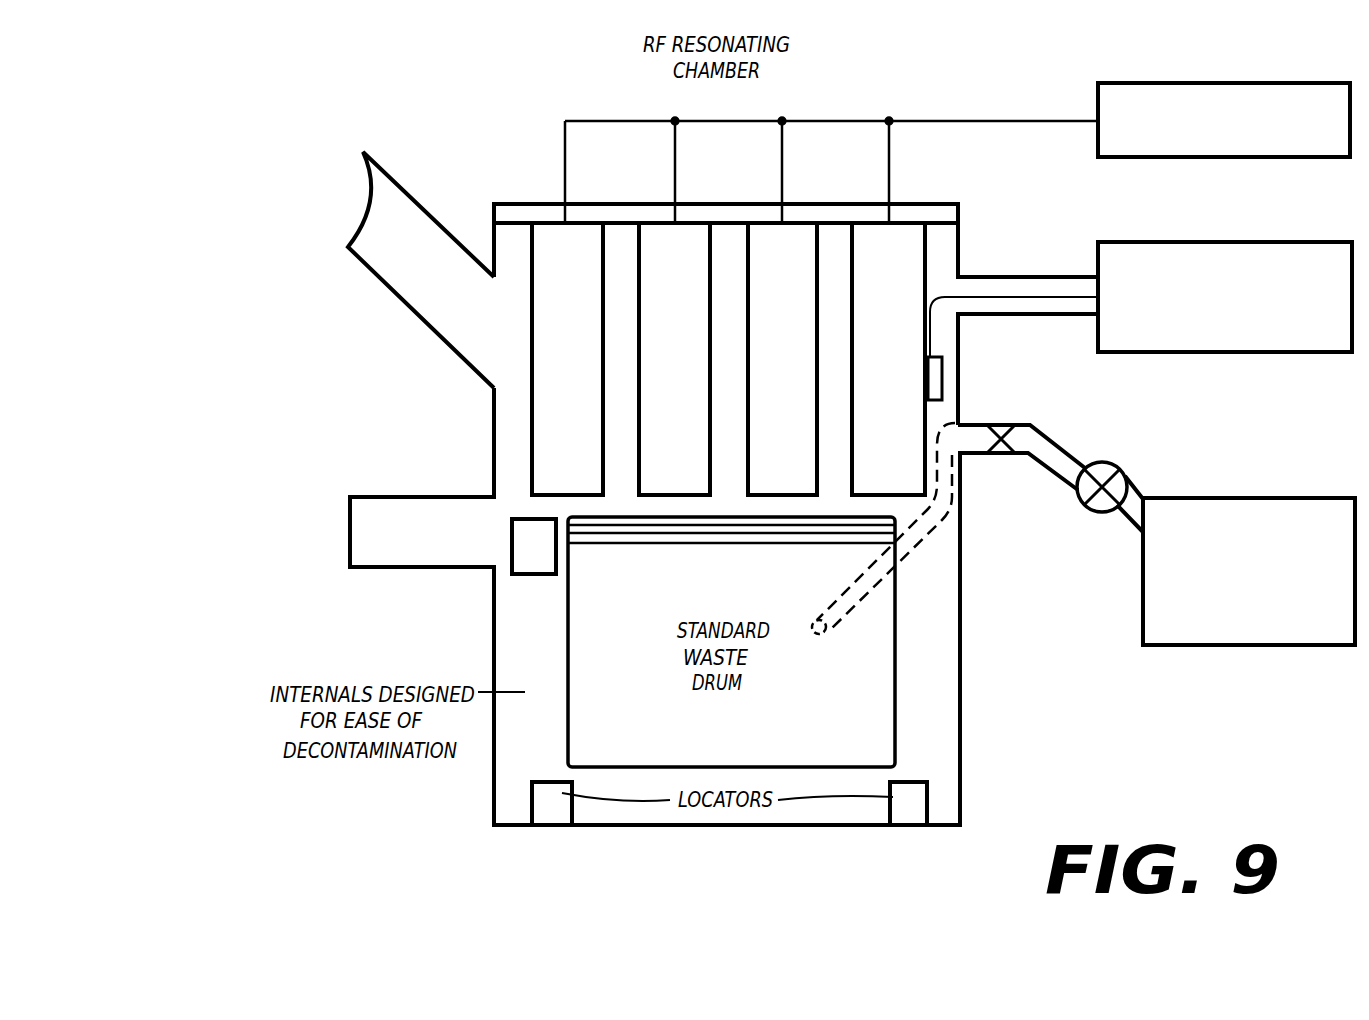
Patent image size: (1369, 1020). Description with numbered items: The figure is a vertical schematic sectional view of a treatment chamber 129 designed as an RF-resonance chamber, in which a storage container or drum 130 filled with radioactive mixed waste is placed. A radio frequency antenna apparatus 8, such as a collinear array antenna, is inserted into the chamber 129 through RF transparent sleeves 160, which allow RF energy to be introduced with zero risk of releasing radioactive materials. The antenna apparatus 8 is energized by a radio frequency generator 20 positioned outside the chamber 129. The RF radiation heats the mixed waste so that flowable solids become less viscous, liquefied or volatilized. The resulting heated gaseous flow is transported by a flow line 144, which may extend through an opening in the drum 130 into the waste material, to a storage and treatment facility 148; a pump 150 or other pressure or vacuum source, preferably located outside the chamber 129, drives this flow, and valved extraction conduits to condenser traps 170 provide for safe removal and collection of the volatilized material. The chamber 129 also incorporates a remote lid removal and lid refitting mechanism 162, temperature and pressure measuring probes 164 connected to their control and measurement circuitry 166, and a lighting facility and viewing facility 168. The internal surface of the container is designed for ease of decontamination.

The radio frequency generator 20 is at (1165, 83).
The control and measurement circuitry 166 is at (1170, 242).
The treatment chamber 129 is at (958, 343).
The temperature and pressure measuring probes 164 is at (935, 383).
The flow line 144 is at (1050, 436).
The valved extraction conduits to condenser traps 170 is at (1000, 447).
The pump 150 is at (1128, 480).
The storage and treatment facility 148 is at (1265, 498).
The storage container or drum 130 is at (895, 658).
The lighting facility and viewing facility 168 is at (343, 210).
The radio frequency antenna apparatus 8 is at (872, 294).
The RF transparent sleeves 160 is at (638, 432).
The remote lid removal and lid refitting mechanism 162 is at (496, 556).